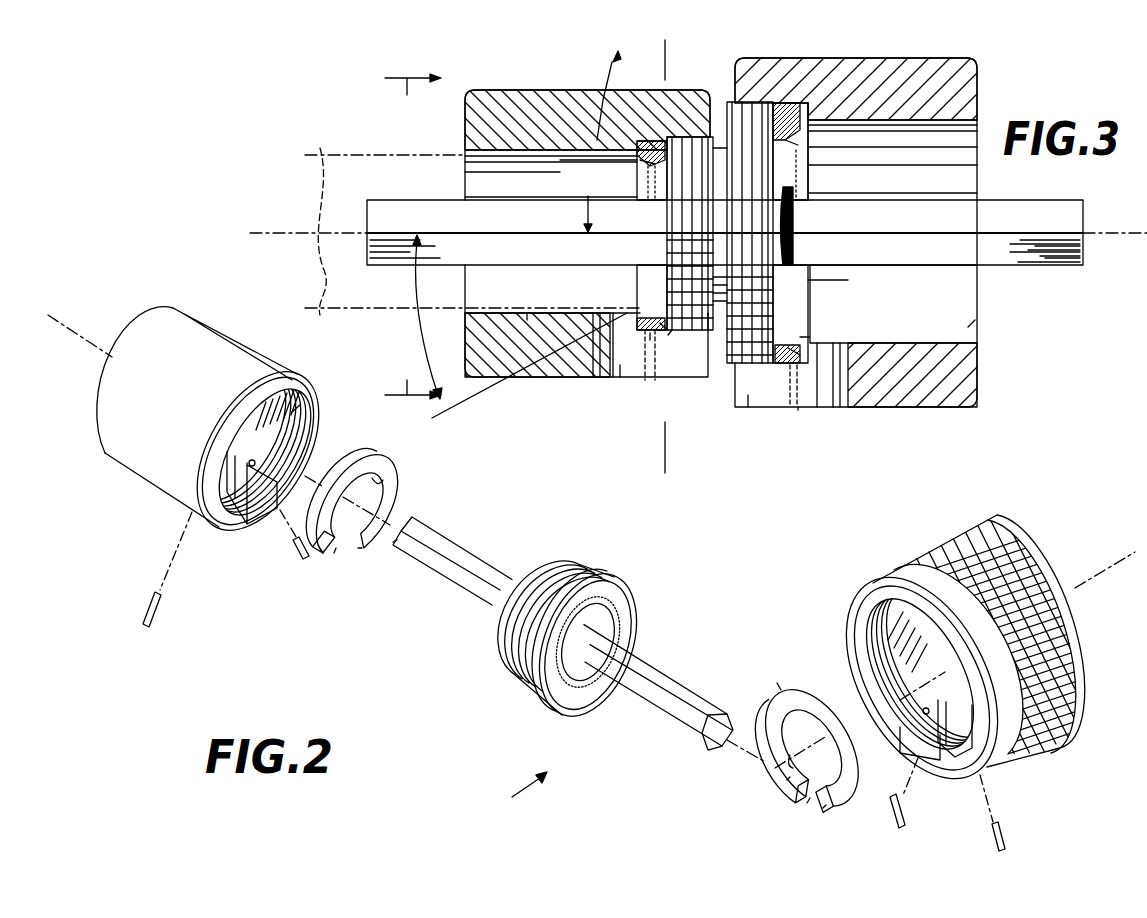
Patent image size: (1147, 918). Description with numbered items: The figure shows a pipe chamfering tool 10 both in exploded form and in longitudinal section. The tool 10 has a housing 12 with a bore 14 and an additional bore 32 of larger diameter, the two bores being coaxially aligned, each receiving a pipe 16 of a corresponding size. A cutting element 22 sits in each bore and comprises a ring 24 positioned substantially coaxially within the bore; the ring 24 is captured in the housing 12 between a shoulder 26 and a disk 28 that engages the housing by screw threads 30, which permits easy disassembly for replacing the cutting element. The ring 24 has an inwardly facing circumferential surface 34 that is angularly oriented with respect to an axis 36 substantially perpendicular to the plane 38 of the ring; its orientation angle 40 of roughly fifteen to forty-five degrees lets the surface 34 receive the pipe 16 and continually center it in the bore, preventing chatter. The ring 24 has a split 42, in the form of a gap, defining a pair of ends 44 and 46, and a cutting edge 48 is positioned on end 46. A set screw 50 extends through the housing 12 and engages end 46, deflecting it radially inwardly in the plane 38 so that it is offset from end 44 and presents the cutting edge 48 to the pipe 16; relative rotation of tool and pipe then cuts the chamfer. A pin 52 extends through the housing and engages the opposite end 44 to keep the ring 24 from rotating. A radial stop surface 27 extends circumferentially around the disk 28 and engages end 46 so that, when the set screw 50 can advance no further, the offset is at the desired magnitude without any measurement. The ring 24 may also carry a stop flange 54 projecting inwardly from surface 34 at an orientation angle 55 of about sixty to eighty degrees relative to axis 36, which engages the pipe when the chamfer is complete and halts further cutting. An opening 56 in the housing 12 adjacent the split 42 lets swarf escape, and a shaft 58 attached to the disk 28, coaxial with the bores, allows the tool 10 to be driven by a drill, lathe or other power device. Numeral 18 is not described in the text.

In FIG. 2, the tool 10 is at (508, 796).
In FIG. 3, the housing 12 is at (525, 115).
In FIG. 2, the housing 12 is at (120, 448).
In FIG. 3, the bore 14 is at (528, 316).
In FIG. 2, the bore 14 is at (237, 437).
In FIG. 3, the pipe 16 is at (340, 165).
In FIG. 2, the knurled nut housing 18 is at (917, 572).
In FIG. 3, the cutting element 22 is at (833, 130).
In FIG. 2, the cutting element 22 is at (390, 462).
In FIG. 3, the ring 24 is at (647, 140).
In FIG. 2, the ring 24 is at (318, 545).
In FIG. 2, the shoulder 26 is at (292, 412).
In FIG. 3, the radial stop surface 27 is at (643, 240).
In FIG. 3, the disk 28 is at (682, 138).
In FIG. 2, the disk 28 is at (537, 574).
In FIG. 3, the screw threads 30 is at (725, 232).
In FIG. 2, the screw threads 30 is at (500, 640).
In FIG. 3, the additional bore 32 is at (968, 327).
In FIG. 2, the additional bore 32 is at (877, 593).
In FIG. 3, the inwardly facing circumferential surface 34 is at (596, 160).
In FIG. 3, the axis 36 is at (250, 233).
In FIG. 3, the plane 38 is at (662, 438).
In FIG. 3, the orientation angle 40 is at (418, 328).
In FIG. 2, the split 42 is at (358, 548).
In FIG. 3, the end 44 is at (788, 348).
In FIG. 2, the end 44 is at (334, 553).
In FIG. 3, the end 46 is at (668, 335).
In FIG. 2, the end 46 is at (393, 542).
In FIG. 3, the cutting edge 48 is at (660, 323).
In FIG. 3, the set screw 50 is at (650, 340).
In FIG. 2, the set screw 50 is at (298, 556).
In FIG. 3, the pin 52 is at (798, 410).
In FIG. 2, the pin 52 is at (156, 607).
In FIG. 3, the stop flange 54 is at (648, 160).
In FIG. 2, the stop flange 54 is at (386, 495).
In FIG. 3, the orientation angle 55 is at (612, 62).
In FIG. 3, the opening 56 is at (623, 378).
In FIG. 2, the opening 56 is at (258, 516).
In FIG. 3, the shaft 58 is at (1047, 260).